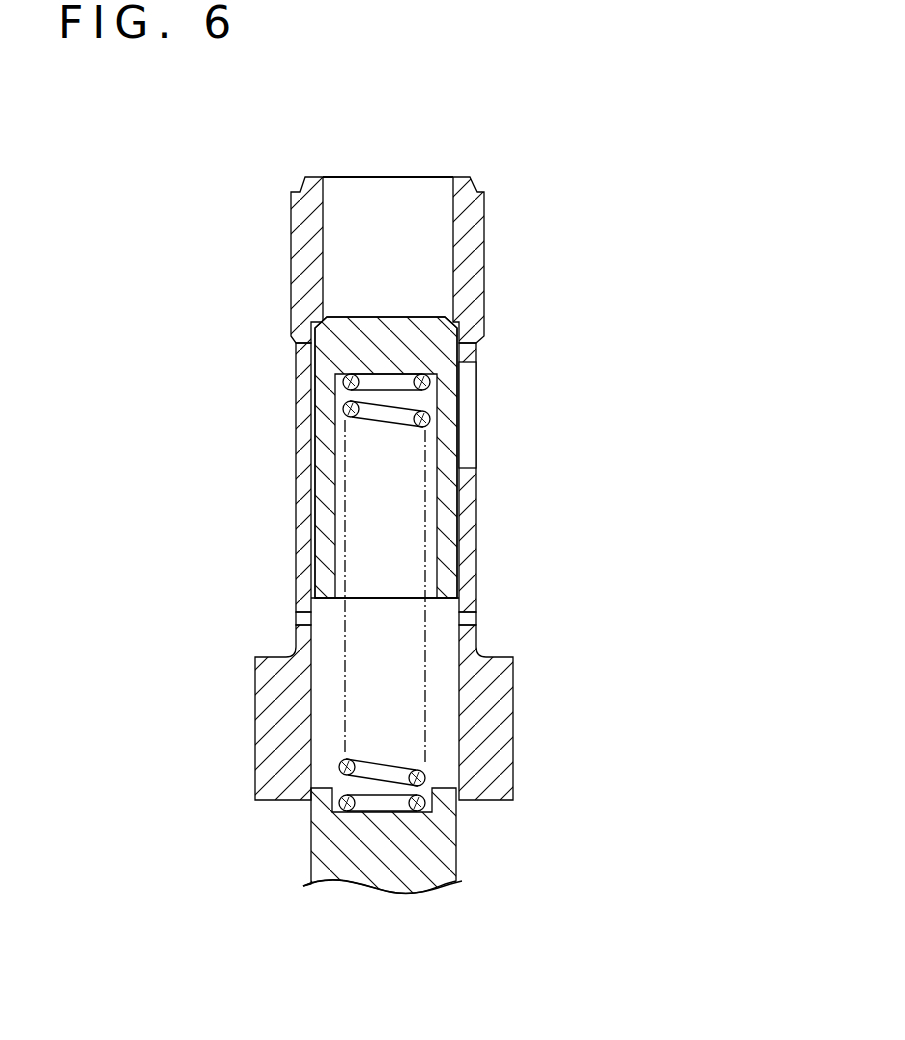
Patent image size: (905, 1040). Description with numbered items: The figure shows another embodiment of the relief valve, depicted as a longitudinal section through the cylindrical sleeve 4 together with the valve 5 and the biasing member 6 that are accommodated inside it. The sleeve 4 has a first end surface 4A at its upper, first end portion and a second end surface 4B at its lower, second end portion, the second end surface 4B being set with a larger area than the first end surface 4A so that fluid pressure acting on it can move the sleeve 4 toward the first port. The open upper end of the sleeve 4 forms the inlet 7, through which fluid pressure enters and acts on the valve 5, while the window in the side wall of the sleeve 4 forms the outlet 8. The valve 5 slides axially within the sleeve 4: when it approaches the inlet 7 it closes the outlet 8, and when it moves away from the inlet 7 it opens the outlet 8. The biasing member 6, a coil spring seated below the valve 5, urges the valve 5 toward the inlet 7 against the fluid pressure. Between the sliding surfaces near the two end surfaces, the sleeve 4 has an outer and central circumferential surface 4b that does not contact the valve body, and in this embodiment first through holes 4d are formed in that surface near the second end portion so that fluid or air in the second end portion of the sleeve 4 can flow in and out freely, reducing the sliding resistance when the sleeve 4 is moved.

The sleeve 4 is at (371, 351).
The first end surface 4A is at (417, 216).
The outer and central circumferential surface 4b is at (380, 477).
The second end surface 4B is at (293, 802).
The first through hole 4d is at (303, 620).
The valve 5 is at (458, 505).
The biasing member 6 is at (430, 775).
The inlet 7 is at (452, 272).
The outlet 8 is at (476, 395).